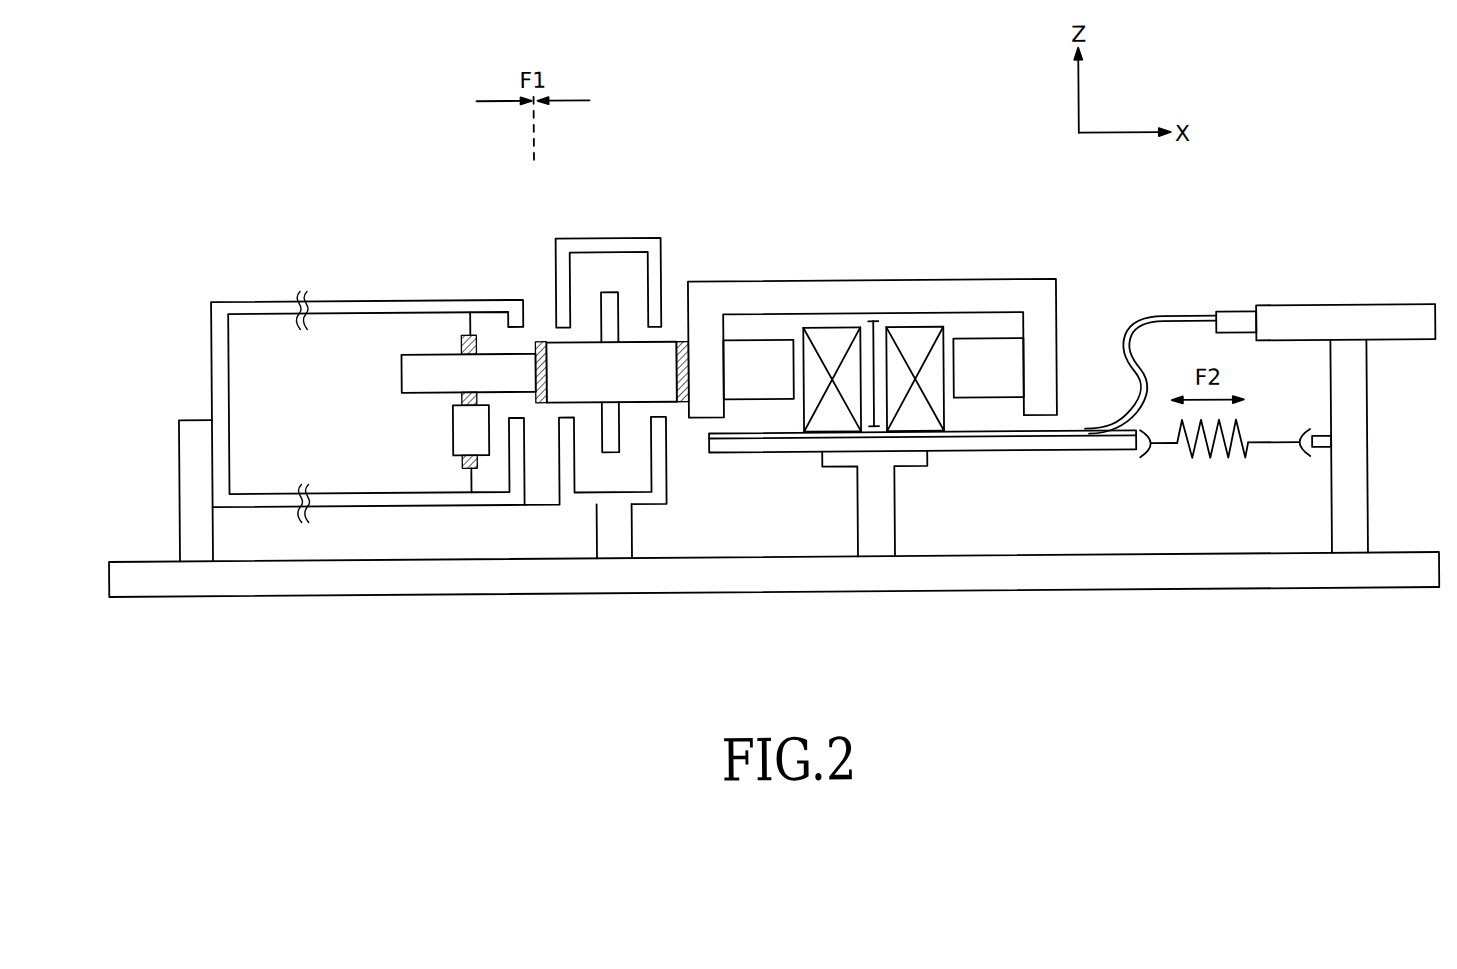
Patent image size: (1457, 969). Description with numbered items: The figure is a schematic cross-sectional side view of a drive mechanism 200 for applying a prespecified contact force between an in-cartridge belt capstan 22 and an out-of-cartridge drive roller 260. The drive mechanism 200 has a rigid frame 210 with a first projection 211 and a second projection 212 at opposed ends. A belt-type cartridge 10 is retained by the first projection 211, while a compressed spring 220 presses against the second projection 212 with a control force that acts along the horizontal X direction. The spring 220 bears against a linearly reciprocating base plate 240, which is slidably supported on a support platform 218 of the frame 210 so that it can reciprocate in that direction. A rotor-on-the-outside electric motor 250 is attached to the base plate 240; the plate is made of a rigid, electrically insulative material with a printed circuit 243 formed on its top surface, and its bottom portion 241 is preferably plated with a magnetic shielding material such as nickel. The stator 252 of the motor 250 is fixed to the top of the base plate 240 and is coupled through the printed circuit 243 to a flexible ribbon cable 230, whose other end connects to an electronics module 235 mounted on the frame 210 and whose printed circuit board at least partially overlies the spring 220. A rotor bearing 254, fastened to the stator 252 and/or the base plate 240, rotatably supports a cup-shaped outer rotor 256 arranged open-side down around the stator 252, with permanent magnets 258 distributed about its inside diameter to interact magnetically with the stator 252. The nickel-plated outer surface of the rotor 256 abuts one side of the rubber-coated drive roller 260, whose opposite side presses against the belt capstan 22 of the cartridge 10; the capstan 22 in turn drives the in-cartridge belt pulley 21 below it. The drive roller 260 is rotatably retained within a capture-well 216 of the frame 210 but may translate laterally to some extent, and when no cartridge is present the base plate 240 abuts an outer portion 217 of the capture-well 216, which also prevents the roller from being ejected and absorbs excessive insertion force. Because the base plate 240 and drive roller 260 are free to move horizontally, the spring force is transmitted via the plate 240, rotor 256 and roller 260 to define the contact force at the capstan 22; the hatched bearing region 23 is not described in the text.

The drive mechanism 200 is at (215, 162).
The belt-type cartridge 10 is at (405, 290).
The in-cartridge belt pulley 21 is at (458, 430).
The belt capstan 22 is at (406, 369).
The bearing 23 is at (529, 324).
The rigid frame 210 is at (730, 581).
The first projection 211 is at (180, 462).
The second projection 212 is at (1358, 446).
The capture-well 216 is at (640, 243).
The outer portion of the capture-well 217 is at (672, 454).
The support platform 218 is at (875, 510).
The compressed spring 220 is at (1247, 480).
The flexible ribbon cable 230 is at (1178, 296).
The electronics module 235 is at (1345, 322).
The reciprocating base plate 240 is at (1050, 456).
The bottom portion of the base plate 241 is at (1076, 462).
The printed circuit 243 is at (1075, 416).
The rotor-on-the-outside electric motor 250 is at (885, 198).
The stator 252 is at (833, 338).
The rotor bearing 254 is at (888, 330).
The outer rotor 256 is at (700, 404).
The permanent magnets 258 is at (992, 401).
The drive roller 260 is at (617, 372).